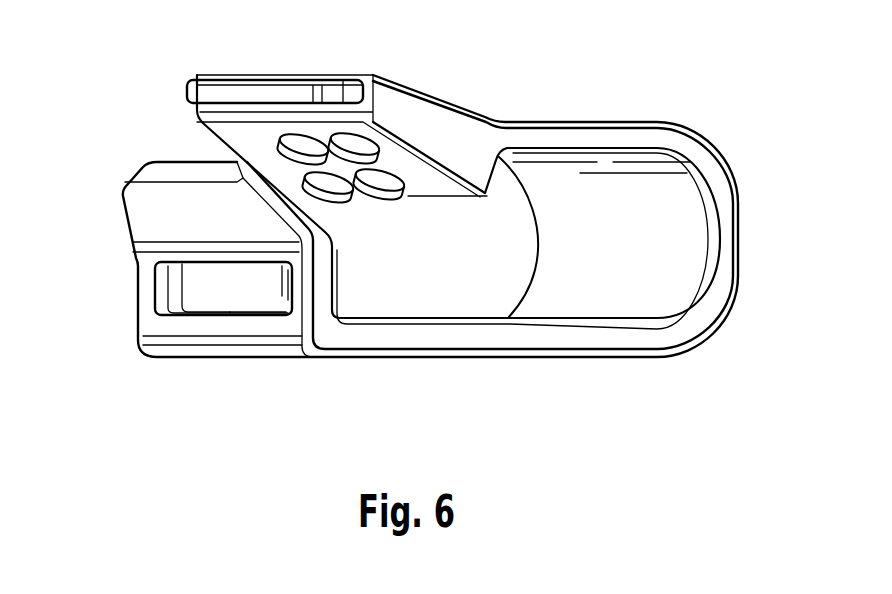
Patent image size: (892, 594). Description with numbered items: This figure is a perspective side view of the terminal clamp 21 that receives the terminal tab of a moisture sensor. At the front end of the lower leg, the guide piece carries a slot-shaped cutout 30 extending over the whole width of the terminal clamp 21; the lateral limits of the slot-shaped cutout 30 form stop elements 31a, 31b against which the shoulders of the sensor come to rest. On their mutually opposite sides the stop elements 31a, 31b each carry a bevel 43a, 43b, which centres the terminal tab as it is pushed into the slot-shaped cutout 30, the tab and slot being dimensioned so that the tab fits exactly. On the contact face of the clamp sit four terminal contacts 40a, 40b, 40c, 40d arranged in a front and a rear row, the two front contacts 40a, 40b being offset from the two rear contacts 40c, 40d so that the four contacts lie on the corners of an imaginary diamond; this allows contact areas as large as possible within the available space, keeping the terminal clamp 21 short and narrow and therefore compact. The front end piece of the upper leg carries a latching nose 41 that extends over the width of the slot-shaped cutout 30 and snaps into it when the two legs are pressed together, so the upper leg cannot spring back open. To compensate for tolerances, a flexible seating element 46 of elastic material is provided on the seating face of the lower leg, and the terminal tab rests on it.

The terminal clamp 21 is at (478, 113).
The latching nose 41 is at (225, 92).
The terminal contact 40a is at (297, 137).
The terminal contact 40b is at (352, 136).
The terminal contact 40c is at (338, 203).
The terminal contact 40d is at (388, 201).
The slot-shaped cutout 30 is at (215, 292).
The stop element 31a is at (172, 276).
The stop element 31b is at (283, 276).
The bevel 43a is at (158, 304).
The bevel 43b is at (281, 297).
The flexible seating element 46 is at (358, 307).